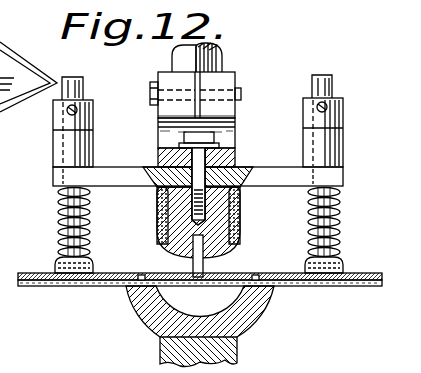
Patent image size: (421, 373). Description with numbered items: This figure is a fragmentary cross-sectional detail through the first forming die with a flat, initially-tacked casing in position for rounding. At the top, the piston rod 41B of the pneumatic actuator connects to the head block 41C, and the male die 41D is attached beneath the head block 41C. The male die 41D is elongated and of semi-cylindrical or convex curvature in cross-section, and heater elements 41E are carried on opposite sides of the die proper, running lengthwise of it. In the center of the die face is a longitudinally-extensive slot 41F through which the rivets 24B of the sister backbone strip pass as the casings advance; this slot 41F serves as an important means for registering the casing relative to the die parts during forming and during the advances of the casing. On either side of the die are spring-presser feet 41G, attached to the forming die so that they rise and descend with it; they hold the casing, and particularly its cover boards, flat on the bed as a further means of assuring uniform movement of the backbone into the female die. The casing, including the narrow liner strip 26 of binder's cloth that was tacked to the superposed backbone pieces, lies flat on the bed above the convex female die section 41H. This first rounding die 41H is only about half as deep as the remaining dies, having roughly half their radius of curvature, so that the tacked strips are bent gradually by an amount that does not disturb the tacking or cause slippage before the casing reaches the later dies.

The piston rod 41B is at (220, 48).
The head block 41C is at (237, 112).
The male die 41D is at (222, 178).
The heater elements 41E is at (158, 212).
The slot 41F is at (233, 228).
The spring-presser feet 41G is at (56, 262).
The rivets 24B is at (194, 268).
The liner strip 26 is at (260, 282).
The female die section 41H is at (254, 312).